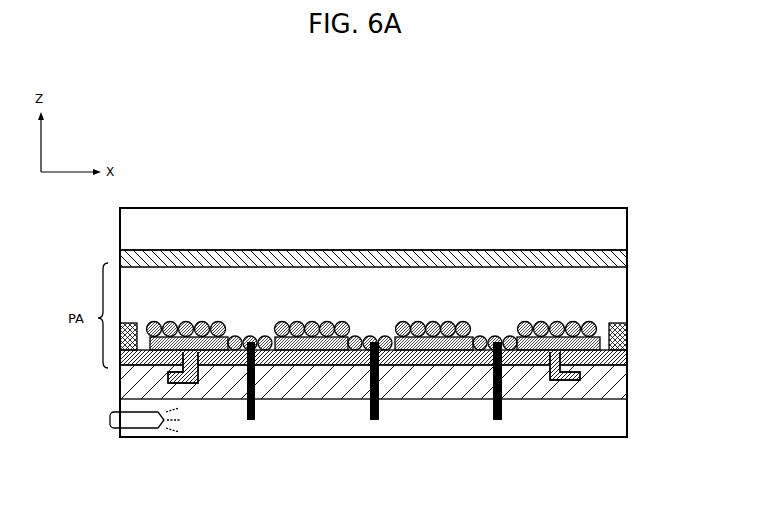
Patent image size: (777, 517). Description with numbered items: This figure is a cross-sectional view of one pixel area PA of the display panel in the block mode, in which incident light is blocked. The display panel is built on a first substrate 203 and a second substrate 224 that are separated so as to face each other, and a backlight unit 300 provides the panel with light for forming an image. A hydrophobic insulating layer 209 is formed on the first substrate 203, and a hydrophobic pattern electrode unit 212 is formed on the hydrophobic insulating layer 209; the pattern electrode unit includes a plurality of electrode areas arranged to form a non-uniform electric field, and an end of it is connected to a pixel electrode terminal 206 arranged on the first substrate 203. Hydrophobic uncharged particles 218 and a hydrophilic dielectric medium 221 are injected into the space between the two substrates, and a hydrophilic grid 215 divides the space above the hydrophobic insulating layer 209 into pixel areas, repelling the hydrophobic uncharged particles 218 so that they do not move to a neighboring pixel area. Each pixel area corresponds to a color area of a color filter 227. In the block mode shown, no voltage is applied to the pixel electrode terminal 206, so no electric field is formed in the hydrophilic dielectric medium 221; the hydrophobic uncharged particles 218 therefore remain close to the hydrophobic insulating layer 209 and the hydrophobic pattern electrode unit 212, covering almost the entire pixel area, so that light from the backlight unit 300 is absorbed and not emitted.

The second substrate 224 is at (627, 214).
The color filter 227 is at (627, 256).
The hydrophilic dielectric medium 221 is at (627, 282).
The hydrophobic uncharged particles 218 is at (597, 320).
The hydrophilic grid 215 is at (627, 332).
The hydrophobic insulating layer 209 is at (627, 356).
The hydrophobic pattern electrode unit 212 is at (583, 380).
The pixel electrode terminal 206 is at (600, 398).
The first substrate 203 is at (627, 400).
The backlight unit 300 is at (627, 437).